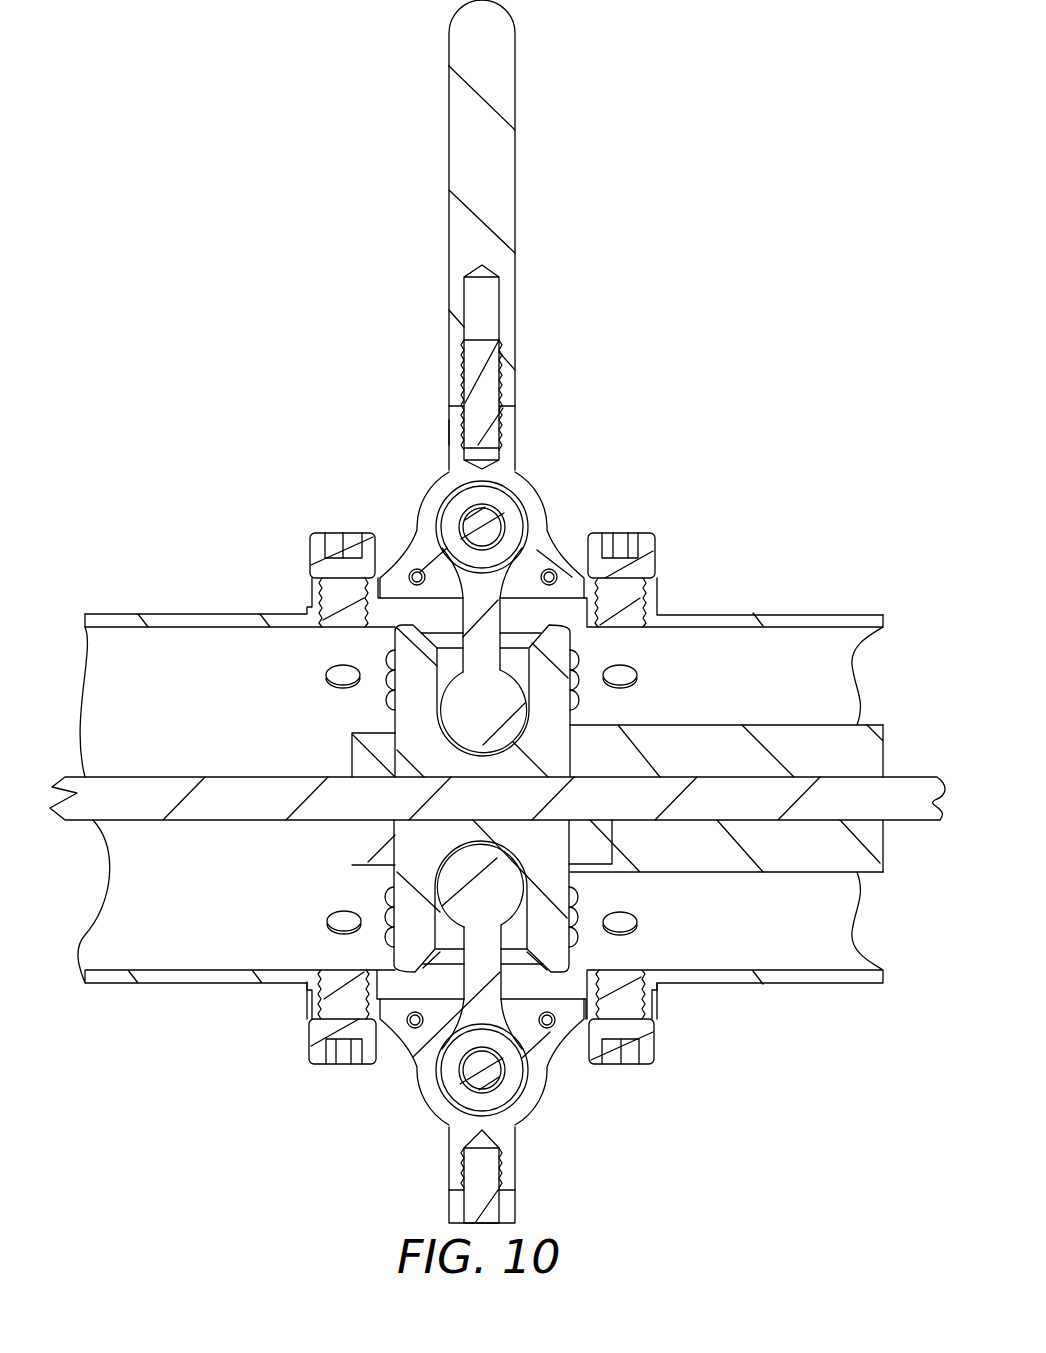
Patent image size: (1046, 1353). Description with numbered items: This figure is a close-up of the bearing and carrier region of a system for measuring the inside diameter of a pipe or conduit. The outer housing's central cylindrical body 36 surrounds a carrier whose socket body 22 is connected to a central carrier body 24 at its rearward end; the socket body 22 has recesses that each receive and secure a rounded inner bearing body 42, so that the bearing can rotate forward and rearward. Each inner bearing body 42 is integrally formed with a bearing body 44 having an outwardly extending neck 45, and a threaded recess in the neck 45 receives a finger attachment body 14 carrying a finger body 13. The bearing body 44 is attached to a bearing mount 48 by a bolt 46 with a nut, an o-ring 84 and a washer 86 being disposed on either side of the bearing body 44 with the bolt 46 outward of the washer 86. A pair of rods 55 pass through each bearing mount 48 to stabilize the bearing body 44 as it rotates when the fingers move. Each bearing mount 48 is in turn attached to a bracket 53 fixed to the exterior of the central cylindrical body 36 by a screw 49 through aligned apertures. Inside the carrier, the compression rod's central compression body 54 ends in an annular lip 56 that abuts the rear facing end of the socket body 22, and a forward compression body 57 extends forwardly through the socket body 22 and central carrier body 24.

The finger body 13 is at (498, 70).
The finger attachment body 14 is at (487, 393).
The socket body 22 is at (545, 698).
The central carrier body 24 is at (717, 743).
The central cylindrical body 36 is at (175, 623).
The inner bearing body 42 is at (458, 703).
The bearing body 44 is at (532, 512).
The neck 45 is at (453, 433).
The bolt 46 is at (567, 585).
The bearing mount 48 is at (573, 577).
The screw 49 is at (312, 560).
The bracket 53 is at (307, 607).
The central compression body 54 is at (238, 795).
The rods 55 is at (415, 570).
The annular lip 56 is at (358, 843).
The forward compression body 57 is at (748, 800).
The o-ring 84 is at (502, 510).
The washer 86 is at (455, 505).